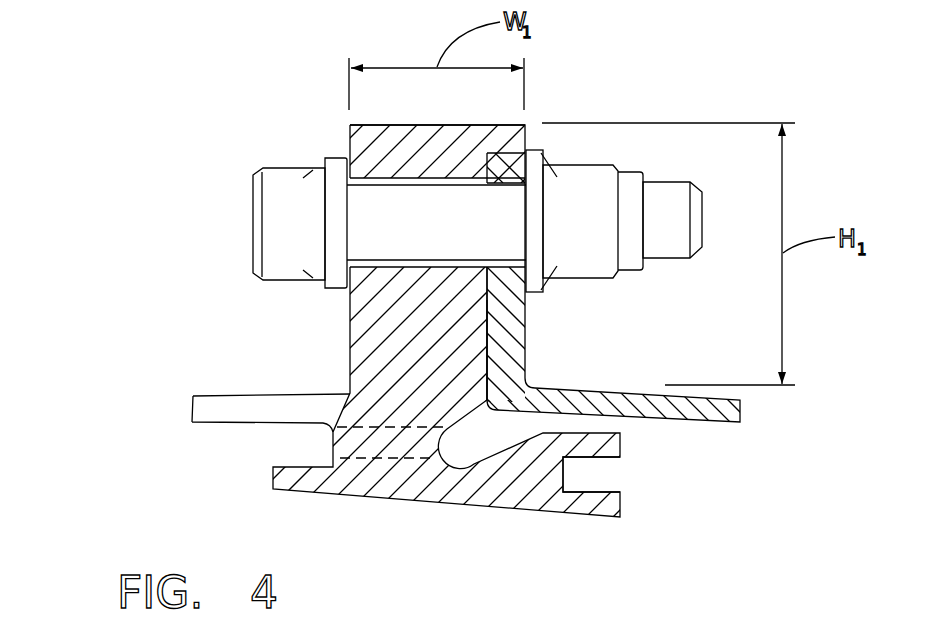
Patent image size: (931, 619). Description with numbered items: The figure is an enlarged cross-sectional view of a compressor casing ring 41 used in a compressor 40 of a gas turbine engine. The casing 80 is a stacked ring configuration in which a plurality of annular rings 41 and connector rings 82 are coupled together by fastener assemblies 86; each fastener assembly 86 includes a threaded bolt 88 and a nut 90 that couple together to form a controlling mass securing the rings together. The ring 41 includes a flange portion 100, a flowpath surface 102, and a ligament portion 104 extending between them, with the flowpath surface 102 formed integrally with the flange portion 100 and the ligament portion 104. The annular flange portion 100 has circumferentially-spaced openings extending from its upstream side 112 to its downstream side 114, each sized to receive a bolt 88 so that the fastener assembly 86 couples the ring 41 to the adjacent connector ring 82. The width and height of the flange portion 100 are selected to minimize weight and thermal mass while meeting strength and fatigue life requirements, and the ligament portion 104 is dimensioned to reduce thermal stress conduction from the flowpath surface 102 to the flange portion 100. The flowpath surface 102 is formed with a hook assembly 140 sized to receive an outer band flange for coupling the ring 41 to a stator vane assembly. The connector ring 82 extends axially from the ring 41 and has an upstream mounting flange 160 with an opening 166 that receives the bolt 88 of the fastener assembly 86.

The compressor 40 is at (162, 85).
The compressor casing ring 41 is at (526, 123).
The casing 80 is at (247, 358).
The connector ring 82 is at (693, 424).
The fastener assembly 86 is at (243, 157).
The threaded bolt 88 is at (300, 163).
The nut 90 is at (582, 278).
The flange portion 100 is at (380, 303).
The flowpath surface 102 is at (445, 508).
The ligament portion 104 is at (333, 437).
The upstream side 112 is at (343, 138).
The downstream side 114 is at (490, 368).
The hook assembly 140 is at (627, 482).
The upstream mounting flange 160 is at (507, 322).
The opening 166 is at (528, 158).